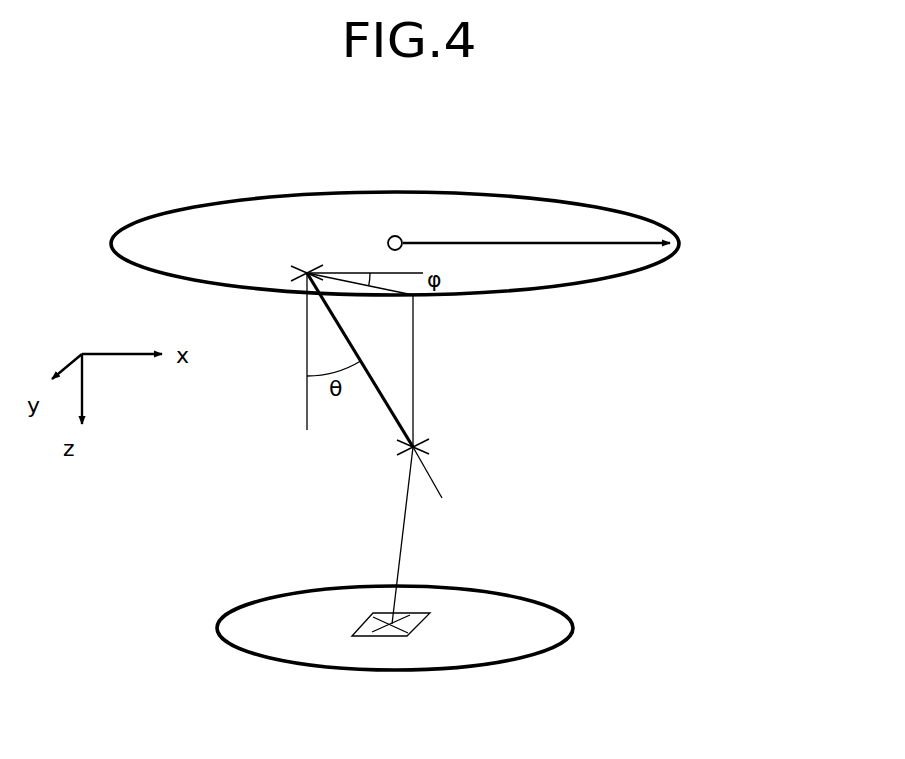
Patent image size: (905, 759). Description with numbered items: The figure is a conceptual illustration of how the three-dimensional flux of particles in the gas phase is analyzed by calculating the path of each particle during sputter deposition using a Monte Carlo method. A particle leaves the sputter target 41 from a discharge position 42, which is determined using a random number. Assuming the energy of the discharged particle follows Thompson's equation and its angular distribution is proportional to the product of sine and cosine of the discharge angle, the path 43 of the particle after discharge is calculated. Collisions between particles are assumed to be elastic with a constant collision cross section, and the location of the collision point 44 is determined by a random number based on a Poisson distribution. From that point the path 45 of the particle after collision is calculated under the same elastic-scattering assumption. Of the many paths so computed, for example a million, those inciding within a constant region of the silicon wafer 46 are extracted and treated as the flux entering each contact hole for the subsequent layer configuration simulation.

The sputter target 41 is at (598, 203).
The discharge position 42 is at (306, 270).
The path of the particle after discharge 43 is at (377, 385).
The ray intersection point 44 is at (418, 442).
The path of the particle after collision 45 is at (405, 505).
The silicon wafer 46 is at (417, 625).